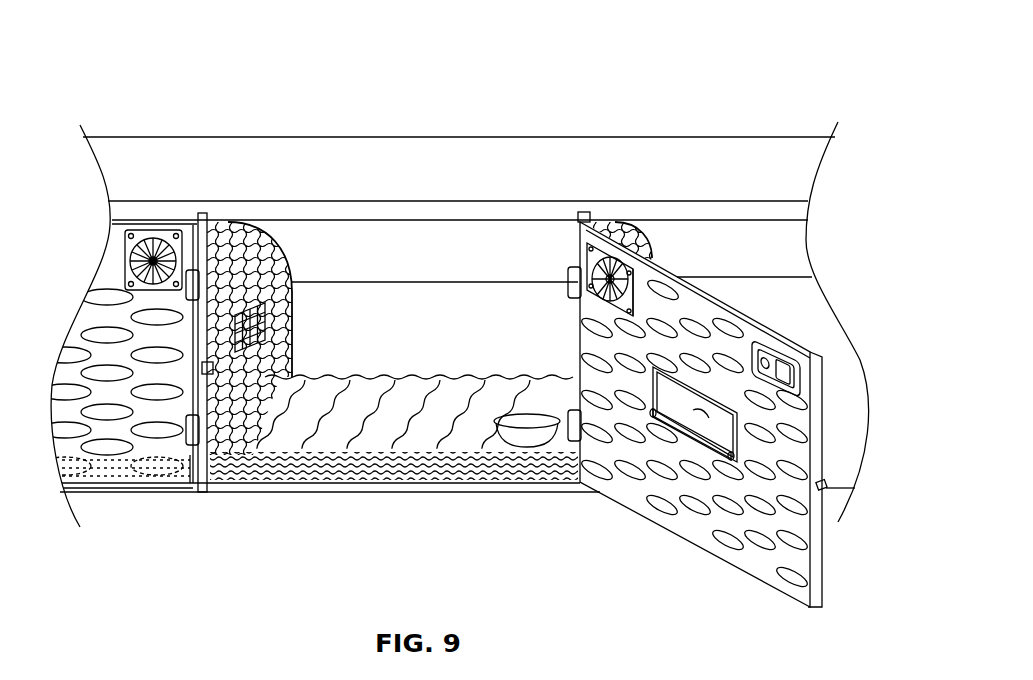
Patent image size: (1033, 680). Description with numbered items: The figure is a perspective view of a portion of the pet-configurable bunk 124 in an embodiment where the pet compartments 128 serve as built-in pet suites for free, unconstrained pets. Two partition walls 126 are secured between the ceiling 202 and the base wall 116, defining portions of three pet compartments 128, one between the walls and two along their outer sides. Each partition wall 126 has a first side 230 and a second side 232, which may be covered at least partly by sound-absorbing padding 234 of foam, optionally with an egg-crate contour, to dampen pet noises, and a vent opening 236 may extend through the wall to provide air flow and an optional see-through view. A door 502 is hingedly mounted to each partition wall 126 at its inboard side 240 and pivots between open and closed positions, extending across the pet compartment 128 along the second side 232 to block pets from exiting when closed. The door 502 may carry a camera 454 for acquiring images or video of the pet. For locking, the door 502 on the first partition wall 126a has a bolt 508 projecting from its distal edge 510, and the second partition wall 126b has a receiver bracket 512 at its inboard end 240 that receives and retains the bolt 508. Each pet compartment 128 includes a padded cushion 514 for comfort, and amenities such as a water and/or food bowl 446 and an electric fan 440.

The base wall 116 is at (384, 490).
The pet-configurable bunk 124 is at (343, 168).
The partition wall 126 is at (200, 477).
The first partition wall 126a is at (585, 212).
The second partition wall 126b is at (207, 213).
The pet compartment 128 is at (128, 200).
The ceiling 202 is at (408, 205).
The first side 230 is at (233, 222).
The second side 232 is at (195, 238).
The sound-absorbing padding 234 is at (300, 283).
The vent opening 236 is at (254, 292).
The inboard side 240 is at (137, 210).
The electric fan 440 is at (636, 268).
The water and/or food bowl 446 is at (517, 443).
The camera 454 is at (807, 397).
The door 502 is at (124, 246).
The bolt 508 is at (828, 490).
The distal edge 510 is at (813, 577).
The receiver bracket 512 is at (200, 367).
The padded cushion 514 is at (453, 450).